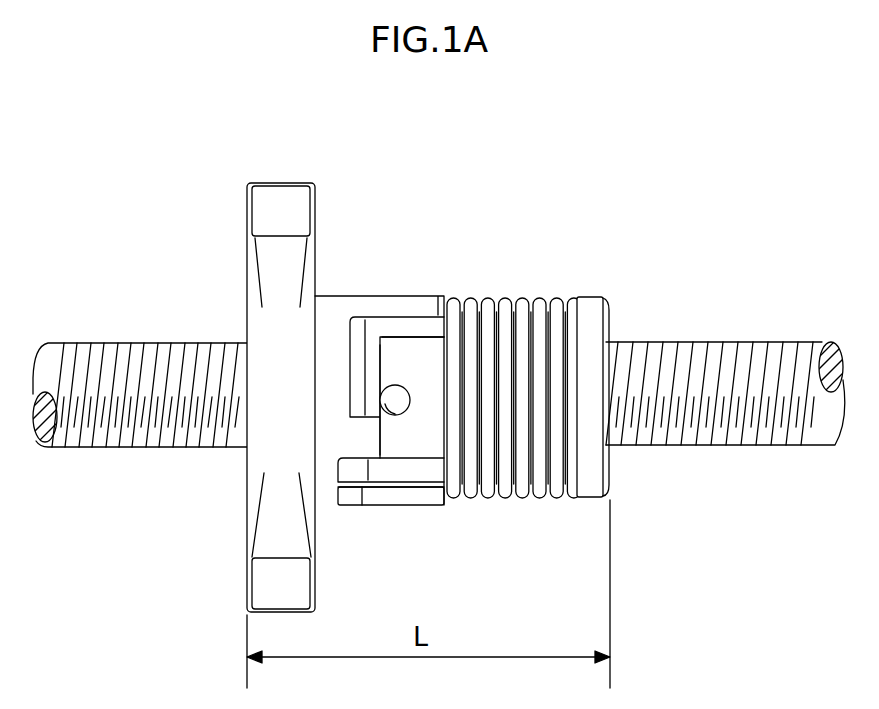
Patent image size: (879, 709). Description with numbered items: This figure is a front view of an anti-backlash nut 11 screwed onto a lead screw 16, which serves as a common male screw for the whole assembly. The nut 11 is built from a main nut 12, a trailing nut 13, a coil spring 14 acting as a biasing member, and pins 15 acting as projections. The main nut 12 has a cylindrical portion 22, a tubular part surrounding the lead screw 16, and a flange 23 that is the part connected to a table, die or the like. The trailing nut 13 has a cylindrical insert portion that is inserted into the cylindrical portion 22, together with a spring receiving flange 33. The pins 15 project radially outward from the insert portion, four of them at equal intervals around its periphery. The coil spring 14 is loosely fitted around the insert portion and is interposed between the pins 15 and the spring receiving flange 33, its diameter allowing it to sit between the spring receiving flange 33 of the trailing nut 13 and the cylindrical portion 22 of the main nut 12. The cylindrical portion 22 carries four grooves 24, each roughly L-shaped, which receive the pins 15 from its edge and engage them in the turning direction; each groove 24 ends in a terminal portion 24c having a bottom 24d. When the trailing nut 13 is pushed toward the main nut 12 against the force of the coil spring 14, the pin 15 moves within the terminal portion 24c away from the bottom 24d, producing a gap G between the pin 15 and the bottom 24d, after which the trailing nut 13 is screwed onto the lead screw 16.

The nut 11 is at (408, 380).
The main nut 12 is at (313, 346).
The trailing nut 13 is at (608, 318).
The coil spring 14 is at (530, 298).
The pins 15 is at (383, 410).
The lead screw 16 is at (190, 338).
The cylindrical portion 22 is at (420, 297).
The flange 23 is at (315, 212).
The grooves 24 is at (305, 411).
The terminal portion 24c is at (380, 408).
The bottom 24d is at (398, 386).
The spring receiving flange 33 is at (561, 261).
The gap G is at (403, 418).